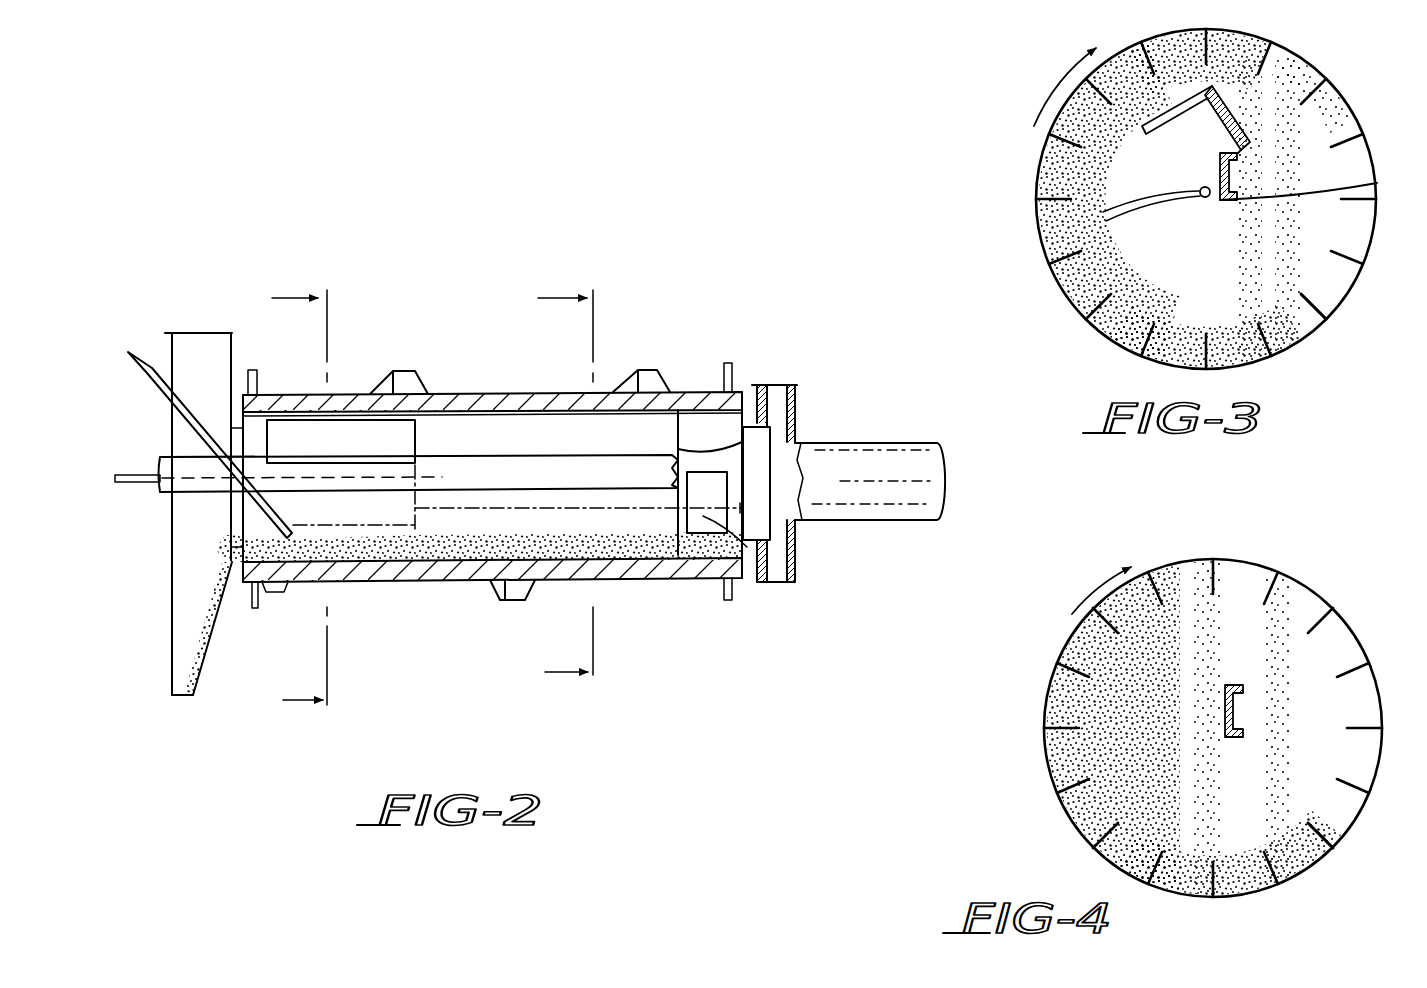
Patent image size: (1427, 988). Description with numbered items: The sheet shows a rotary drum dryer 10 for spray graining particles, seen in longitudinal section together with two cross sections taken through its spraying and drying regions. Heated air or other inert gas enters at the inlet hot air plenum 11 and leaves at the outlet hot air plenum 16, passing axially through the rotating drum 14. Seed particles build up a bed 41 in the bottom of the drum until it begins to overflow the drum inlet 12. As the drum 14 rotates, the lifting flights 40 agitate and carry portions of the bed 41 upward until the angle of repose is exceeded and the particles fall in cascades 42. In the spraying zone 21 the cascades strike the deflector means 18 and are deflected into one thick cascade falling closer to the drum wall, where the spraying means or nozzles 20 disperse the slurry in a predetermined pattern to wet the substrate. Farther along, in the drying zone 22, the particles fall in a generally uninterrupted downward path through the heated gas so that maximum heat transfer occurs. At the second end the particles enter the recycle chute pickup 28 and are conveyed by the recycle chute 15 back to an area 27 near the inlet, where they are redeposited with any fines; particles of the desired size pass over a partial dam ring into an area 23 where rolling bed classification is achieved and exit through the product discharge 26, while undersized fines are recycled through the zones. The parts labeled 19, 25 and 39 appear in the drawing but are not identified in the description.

In FIG. 2, the rotary drum dryer 10 is at (449, 338).
In FIG. 2, the inlet hot air plenum 11 is at (197, 332).
In FIG. 2, the drum inlet 12 is at (232, 563).
In FIG. 2, the drum 14 is at (487, 397).
In FIG. 3, the drum 14 is at (1352, 110).
In FIG. 4, the drum 14 is at (1273, 574).
In FIG. 2, the recycle chute 15 is at (638, 368).
In FIG. 2, the outlet hot air plenum 16 is at (777, 385).
In FIG. 2, the deflector means 18 is at (340, 457).
In FIG. 3, the deflector means 18 is at (1240, 110).
In FIG. 2, the shaft 19 is at (157, 460).
In FIG. 3, the shaft 19 is at (1390, 177).
In FIG. 4, the shaft 19 is at (1243, 686).
In FIG. 2, the spraying means or nozzles 20 is at (321, 472).
In FIG. 3, the spraying means or nozzles 20 is at (1203, 198).
In FIG. 2, the spraying zone 21 is at (354, 503).
In FIG. 2, the drying zone 22 is at (578, 509).
In FIG. 2, the area 23 is at (237, 512).
In FIG. 2, the feed tube 25 is at (142, 371).
In FIG. 2, the product discharge 26 is at (173, 688).
In FIG. 2, the area 27 is at (243, 532).
In FIG. 2, the recycle chute pickup 28 is at (737, 533).
In FIG. 2, the partition 39 is at (680, 449).
In FIG. 3, the lifting flights 40 is at (1322, 303).
In FIG. 4, the lifting flights 40 is at (1340, 782).
In FIG. 2, the bed 41 is at (456, 580).
In FIG. 3, the bed 41 is at (1163, 347).
In FIG. 4, the bed 41 is at (1238, 868).
In FIG. 3, the cascades 42 is at (1120, 158).
In FIG. 4, the cascades 42 is at (1110, 710).